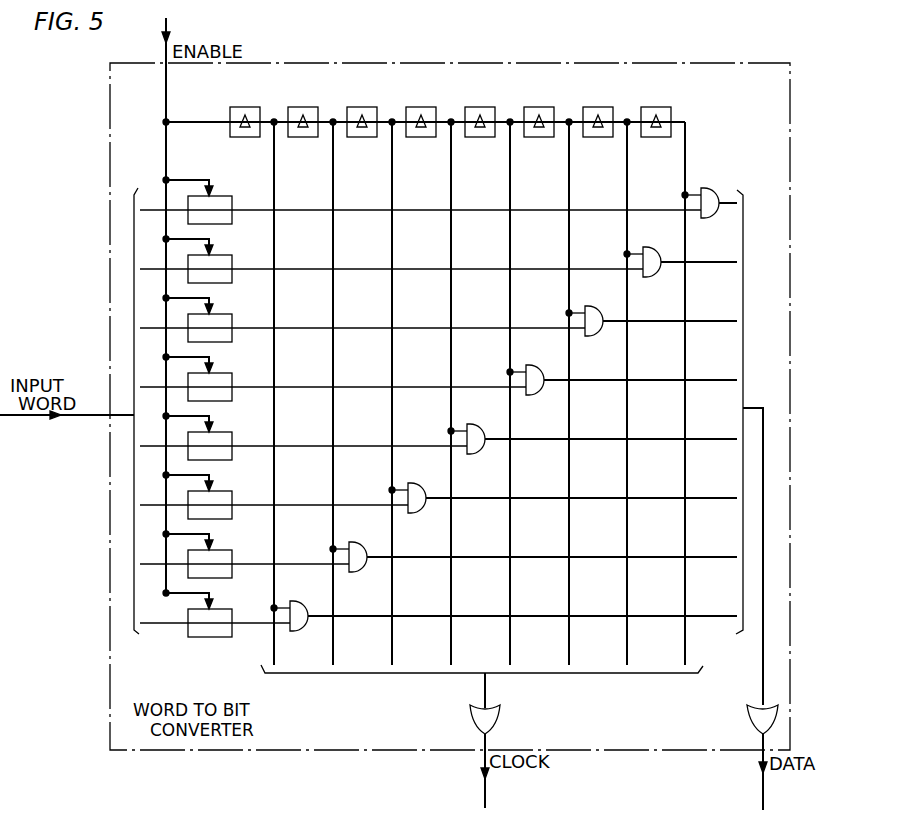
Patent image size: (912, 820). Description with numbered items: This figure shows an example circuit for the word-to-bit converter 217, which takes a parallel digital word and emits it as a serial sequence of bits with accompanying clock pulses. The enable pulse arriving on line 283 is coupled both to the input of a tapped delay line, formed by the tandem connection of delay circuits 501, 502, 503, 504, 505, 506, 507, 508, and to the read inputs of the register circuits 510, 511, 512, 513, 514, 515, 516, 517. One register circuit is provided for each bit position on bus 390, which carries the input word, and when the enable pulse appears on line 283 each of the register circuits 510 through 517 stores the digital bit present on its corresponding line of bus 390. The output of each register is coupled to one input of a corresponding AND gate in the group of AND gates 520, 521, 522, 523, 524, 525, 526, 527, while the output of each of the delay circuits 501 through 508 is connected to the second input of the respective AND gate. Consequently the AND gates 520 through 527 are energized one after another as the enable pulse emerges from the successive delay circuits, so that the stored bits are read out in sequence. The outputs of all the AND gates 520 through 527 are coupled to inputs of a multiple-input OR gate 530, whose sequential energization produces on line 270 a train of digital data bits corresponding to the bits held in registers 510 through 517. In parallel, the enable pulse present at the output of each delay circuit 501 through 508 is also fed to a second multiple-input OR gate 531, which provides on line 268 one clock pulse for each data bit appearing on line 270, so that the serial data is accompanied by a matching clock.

The word-to-bit converter 217 is at (588, 68).
The line 283 is at (166, 51).
The bus 390 is at (33, 419).
The delay circuit 501 is at (239, 106).
The delay circuit 502 is at (297, 106).
The delay circuit 503 is at (356, 106).
The delay circuit 504 is at (415, 106).
The delay circuit 505 is at (474, 106).
The delay circuit 506 is at (533, 106).
The delay circuit 507 is at (592, 106).
The delay circuit 508 is at (650, 106).
The register circuit 510 is at (222, 195).
The register circuit 511 is at (222, 254).
The register circuit 512 is at (222, 313).
The register circuit 513 is at (222, 372).
The register circuit 514 is at (222, 431).
The register circuit 515 is at (222, 490).
The register circuit 516 is at (222, 549).
The register circuit 517 is at (222, 608).
The AND gate 520 is at (295, 587).
The AND gate 521 is at (354, 528).
The AND gate 522 is at (413, 469).
The AND gate 523 is at (472, 410).
The AND gate 524 is at (531, 351).
The AND gate 525 is at (590, 292).
The AND gate 526 is at (648, 233).
The AND gate 527 is at (706, 174).
The multiple-input OR gate 530 is at (748, 712).
The multiple-input OR gate 531 is at (471, 711).
The line 268 is at (484, 766).
The line 270 is at (762, 766).